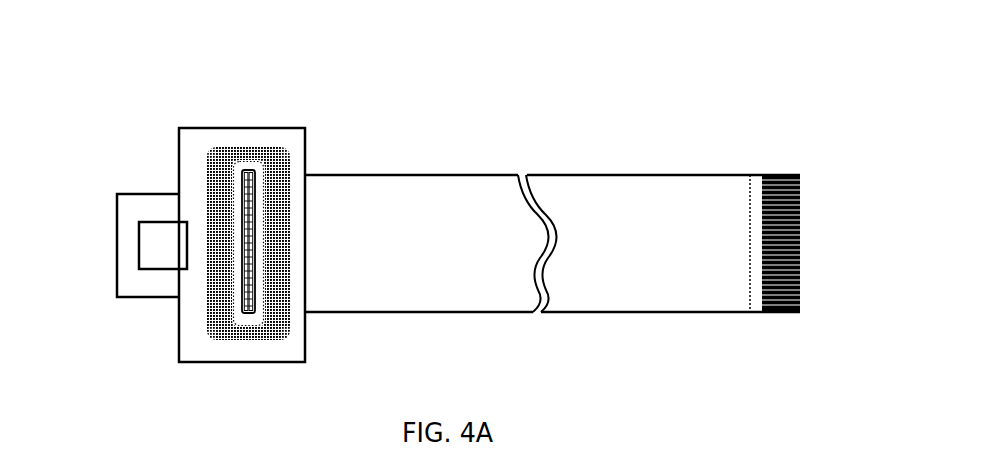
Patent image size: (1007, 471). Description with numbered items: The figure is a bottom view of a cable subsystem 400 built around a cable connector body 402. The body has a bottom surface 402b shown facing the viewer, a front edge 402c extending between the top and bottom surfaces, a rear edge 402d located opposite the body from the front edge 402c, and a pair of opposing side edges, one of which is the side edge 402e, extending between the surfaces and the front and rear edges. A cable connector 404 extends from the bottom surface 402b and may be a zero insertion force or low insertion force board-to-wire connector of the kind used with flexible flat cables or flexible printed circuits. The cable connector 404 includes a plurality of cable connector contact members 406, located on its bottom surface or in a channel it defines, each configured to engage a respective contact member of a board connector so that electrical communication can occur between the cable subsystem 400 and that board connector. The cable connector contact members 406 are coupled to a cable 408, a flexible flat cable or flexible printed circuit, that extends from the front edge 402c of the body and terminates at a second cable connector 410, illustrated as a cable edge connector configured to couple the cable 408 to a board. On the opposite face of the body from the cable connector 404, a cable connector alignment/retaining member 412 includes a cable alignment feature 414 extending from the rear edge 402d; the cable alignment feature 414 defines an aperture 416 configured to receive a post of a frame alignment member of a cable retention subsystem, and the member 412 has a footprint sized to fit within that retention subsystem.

The cable subsystem 400 is at (448, 206).
The cable connector body 402 is at (260, 238).
The bottom surface 402b is at (309, 136).
The front edge 402c is at (340, 262).
The rear edge 402d is at (168, 243).
The side edge 402e is at (303, 237).
The cable connector 404 is at (164, 254).
The cable connector contact members 406 is at (188, 216).
The cable 408 is at (552, 211).
The second cable connector 410 is at (814, 211).
The cable connector alignment/retaining member 412 is at (208, 225).
The cable alignment feature 414 is at (104, 239).
The aperture 416 is at (130, 245).